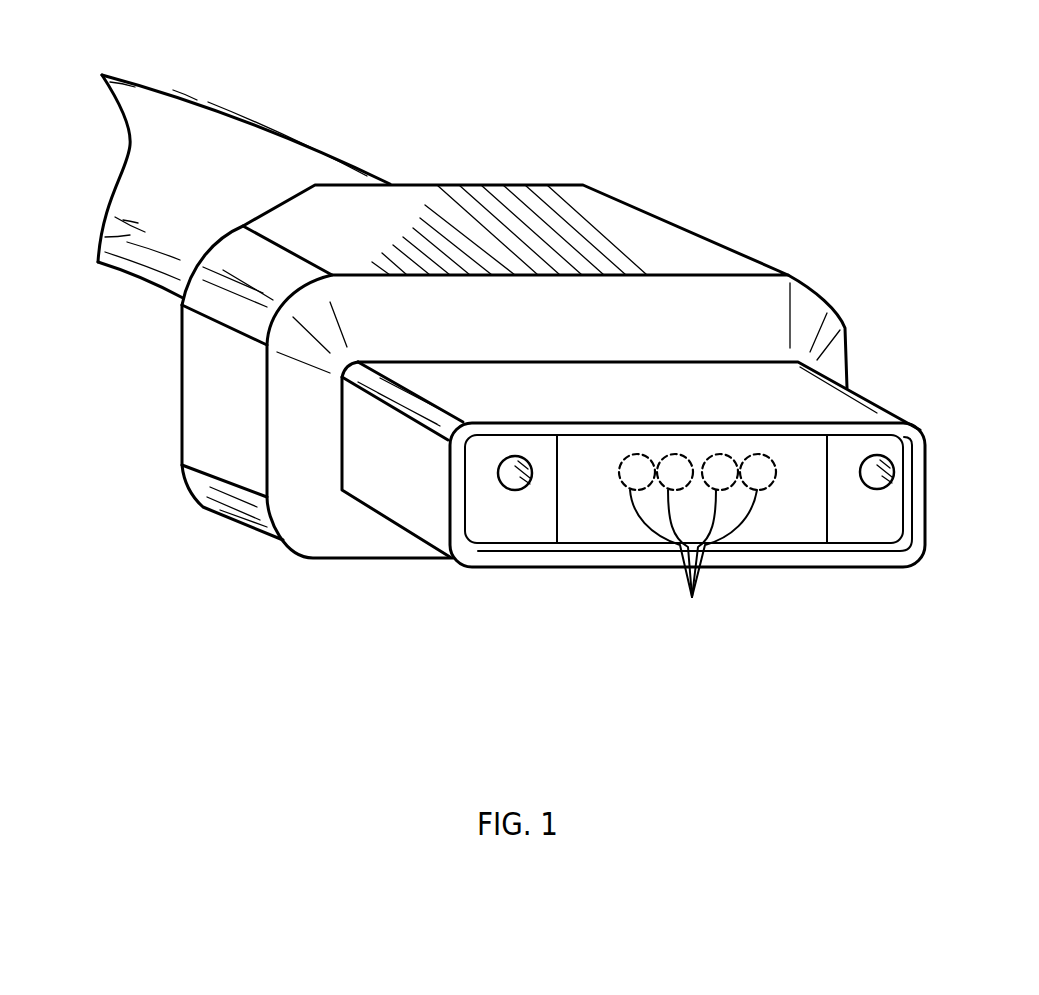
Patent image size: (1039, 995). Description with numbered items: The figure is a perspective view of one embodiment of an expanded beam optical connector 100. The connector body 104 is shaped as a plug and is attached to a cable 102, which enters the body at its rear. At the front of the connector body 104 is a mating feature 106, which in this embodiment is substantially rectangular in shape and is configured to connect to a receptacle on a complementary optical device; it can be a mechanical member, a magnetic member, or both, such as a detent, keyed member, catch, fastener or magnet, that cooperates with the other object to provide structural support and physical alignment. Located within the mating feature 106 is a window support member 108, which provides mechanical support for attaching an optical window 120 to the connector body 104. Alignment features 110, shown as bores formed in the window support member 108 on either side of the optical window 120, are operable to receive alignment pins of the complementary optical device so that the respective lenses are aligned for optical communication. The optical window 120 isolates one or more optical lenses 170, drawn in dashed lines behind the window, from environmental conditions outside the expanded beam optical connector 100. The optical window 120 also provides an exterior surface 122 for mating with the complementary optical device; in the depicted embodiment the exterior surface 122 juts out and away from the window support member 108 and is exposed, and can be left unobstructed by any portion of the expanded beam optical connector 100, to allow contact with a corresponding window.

The expanded beam optical connector 100 is at (588, 394).
The cable 102 is at (323, 148).
The connector body 104 is at (691, 234).
The mating feature 106 is at (513, 563).
The window support member 108 is at (482, 455).
The alignment features 110 is at (510, 490).
The optical window 120 is at (586, 452).
The exterior surface 122 is at (808, 528).
The optical lenses 170 is at (693, 561).